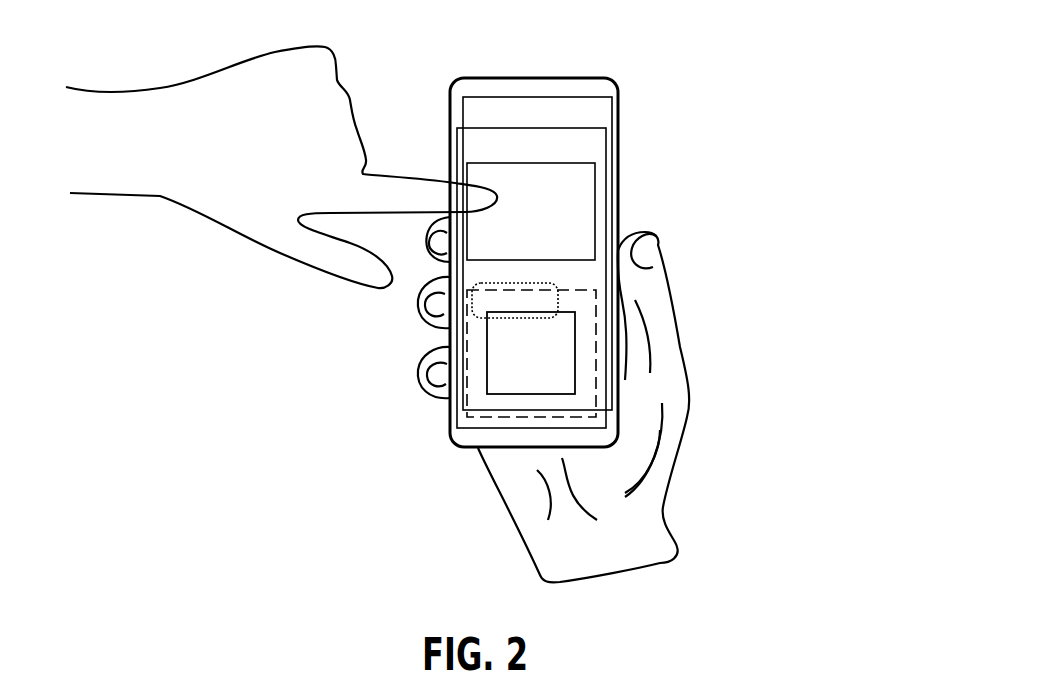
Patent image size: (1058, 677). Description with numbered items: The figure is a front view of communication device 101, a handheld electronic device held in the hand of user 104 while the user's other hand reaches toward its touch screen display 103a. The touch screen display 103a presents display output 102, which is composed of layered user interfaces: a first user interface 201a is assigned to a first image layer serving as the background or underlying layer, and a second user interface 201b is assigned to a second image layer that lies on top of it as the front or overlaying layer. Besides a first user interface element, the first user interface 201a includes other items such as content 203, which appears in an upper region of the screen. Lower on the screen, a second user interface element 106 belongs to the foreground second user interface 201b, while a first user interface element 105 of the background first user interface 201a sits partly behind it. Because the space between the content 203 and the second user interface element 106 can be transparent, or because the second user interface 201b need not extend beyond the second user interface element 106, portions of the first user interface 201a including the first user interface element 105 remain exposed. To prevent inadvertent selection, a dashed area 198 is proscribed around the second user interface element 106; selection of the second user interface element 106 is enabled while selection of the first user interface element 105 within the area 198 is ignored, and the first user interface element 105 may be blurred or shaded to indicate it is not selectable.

The communication device 101 is at (618, 99).
The display output 102 is at (459, 118).
The touch screen display 103a is at (465, 90).
The user 104 is at (680, 331).
The first user interface element 105 is at (470, 316).
The second user interface element 106 is at (567, 375).
The area 198 is at (466, 417).
The first user interface 201a is at (592, 125).
The second user interface 201b is at (600, 156).
The content 203 is at (583, 193).